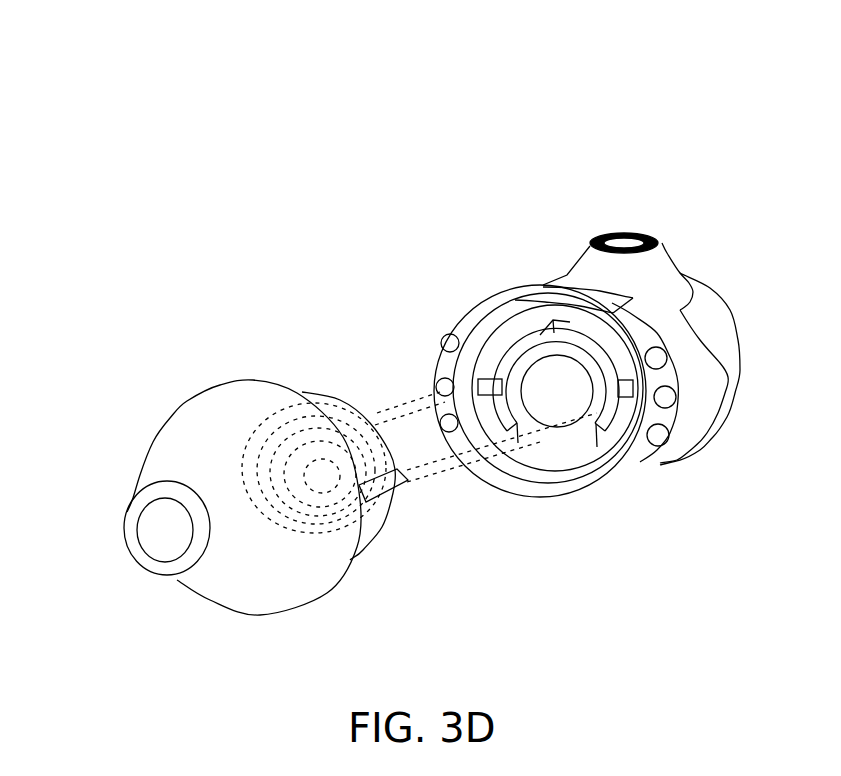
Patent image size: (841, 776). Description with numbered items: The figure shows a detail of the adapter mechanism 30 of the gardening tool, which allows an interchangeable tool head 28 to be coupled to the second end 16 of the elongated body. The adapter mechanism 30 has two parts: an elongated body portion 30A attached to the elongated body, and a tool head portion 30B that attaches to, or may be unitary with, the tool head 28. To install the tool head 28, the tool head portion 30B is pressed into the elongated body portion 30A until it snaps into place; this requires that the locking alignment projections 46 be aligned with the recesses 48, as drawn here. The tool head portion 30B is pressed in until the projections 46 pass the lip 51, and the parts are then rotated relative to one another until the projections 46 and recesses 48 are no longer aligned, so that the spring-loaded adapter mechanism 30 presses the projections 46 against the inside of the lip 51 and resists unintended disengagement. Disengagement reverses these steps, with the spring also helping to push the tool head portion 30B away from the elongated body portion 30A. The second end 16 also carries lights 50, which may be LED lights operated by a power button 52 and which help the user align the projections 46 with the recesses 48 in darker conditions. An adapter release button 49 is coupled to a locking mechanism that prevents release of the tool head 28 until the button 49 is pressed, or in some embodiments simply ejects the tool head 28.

The second end 16 is at (535, 533).
The tool head 28 is at (200, 462).
The adapter mechanism 30 is at (360, 150).
The elongated body portion 30A is at (581, 473).
The tool head portion 30B is at (378, 518).
The locking alignment projections 46 is at (395, 478).
The recesses 48 is at (487, 383).
The adapter release button 49 is at (580, 287).
The lights 50 is at (447, 375).
The lip 51 is at (505, 327).
The power button 52 is at (618, 237).